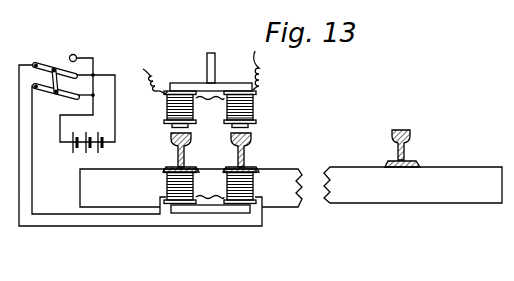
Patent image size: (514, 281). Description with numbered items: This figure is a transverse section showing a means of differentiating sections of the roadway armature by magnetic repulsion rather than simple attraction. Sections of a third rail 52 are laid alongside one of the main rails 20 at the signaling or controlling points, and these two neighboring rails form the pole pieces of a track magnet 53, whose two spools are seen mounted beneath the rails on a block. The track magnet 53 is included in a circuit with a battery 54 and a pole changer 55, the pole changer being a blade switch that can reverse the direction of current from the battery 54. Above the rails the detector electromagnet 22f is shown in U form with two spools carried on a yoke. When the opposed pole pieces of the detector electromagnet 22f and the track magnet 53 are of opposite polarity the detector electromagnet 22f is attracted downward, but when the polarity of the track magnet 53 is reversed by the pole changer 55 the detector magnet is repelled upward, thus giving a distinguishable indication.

The pole changer 55 is at (56, 69).
The battery 54 is at (71, 155).
The detector electromagnet 22f is at (201, 85).
The main rail 20 is at (420, 129).
The third rail 52 is at (252, 138).
The track magnet 53 is at (256, 177).